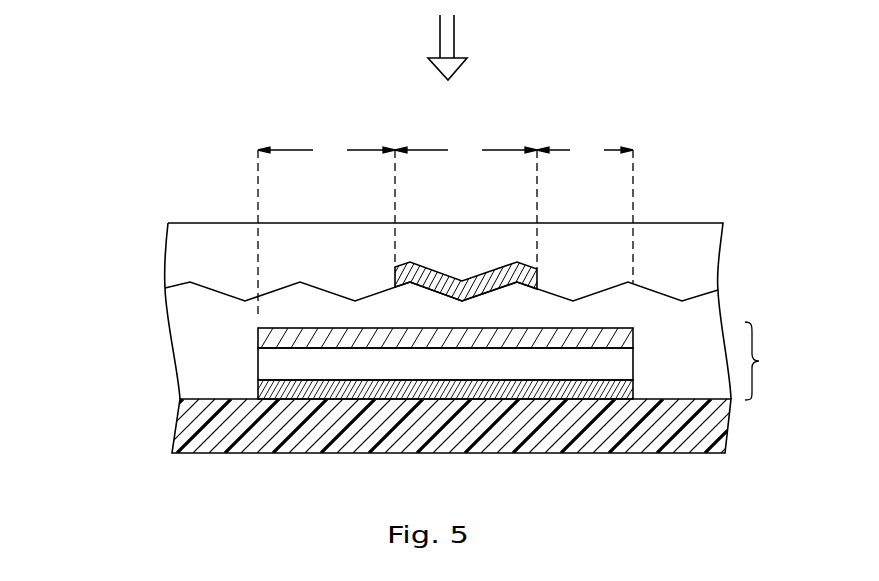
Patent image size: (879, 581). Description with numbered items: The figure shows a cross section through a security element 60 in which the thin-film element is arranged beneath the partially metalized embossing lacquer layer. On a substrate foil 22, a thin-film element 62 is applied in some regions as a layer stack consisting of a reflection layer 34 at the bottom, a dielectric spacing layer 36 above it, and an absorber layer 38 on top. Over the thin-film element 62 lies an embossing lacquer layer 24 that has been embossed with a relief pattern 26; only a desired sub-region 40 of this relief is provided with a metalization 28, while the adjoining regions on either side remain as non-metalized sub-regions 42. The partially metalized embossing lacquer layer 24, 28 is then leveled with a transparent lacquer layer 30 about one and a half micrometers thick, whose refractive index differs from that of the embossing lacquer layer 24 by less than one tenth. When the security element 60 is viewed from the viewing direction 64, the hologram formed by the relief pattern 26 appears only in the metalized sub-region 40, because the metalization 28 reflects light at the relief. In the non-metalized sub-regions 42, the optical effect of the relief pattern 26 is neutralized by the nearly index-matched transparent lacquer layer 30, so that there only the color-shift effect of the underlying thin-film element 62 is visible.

The substrate foil 22 is at (713, 427).
The embossing lacquer layer 24 is at (187, 337).
The relief pattern 26 is at (698, 295).
The metalization 28 is at (430, 278).
The transparent lacquer layer 30 is at (703, 257).
The reflection layer 34 is at (623, 390).
The dielectric spacing layer 36 is at (623, 364).
The absorber layer 38 is at (623, 340).
The metalized sub-region 40 is at (466, 203).
The non-metalized sub-region 42 is at (445, 227).
The security element 60 is at (113, 218).
The thin-film element 62 is at (768, 361).
The viewing direction 64 is at (455, 35).